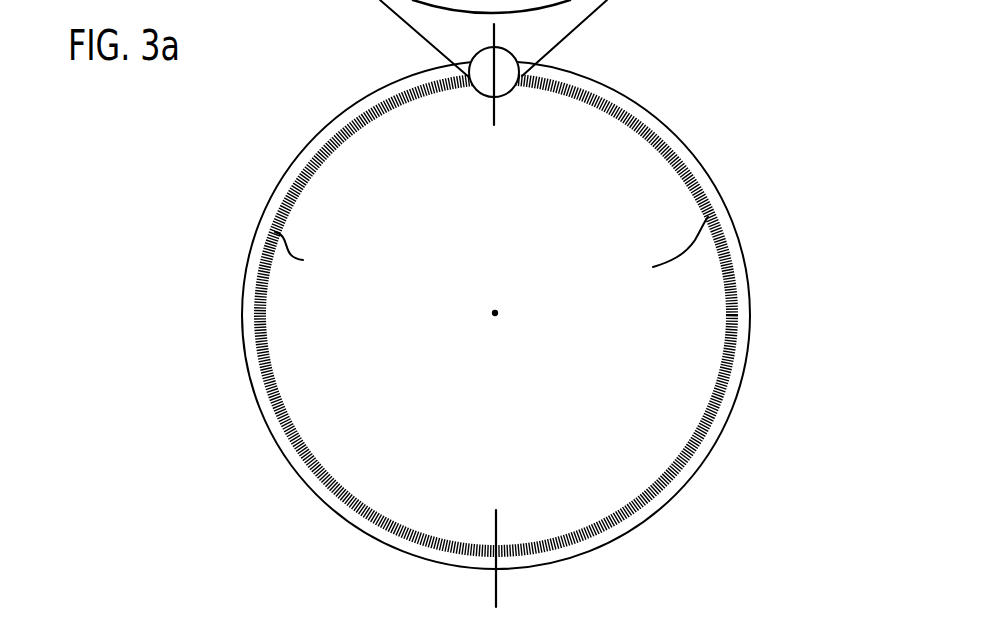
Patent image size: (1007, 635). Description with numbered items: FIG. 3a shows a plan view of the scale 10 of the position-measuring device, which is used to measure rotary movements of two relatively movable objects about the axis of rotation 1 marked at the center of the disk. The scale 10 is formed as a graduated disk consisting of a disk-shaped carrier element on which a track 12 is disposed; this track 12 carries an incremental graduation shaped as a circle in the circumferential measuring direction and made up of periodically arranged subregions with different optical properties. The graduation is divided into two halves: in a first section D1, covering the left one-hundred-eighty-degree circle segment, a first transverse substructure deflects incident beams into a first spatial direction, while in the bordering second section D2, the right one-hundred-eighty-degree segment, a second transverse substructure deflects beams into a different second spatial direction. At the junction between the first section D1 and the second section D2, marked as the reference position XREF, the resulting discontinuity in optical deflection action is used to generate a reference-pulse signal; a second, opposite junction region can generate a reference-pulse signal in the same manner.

The axis of rotation 1 is at (495, 313).
The scale 10 is at (238, 422).
The track 12 is at (342, 508).
The first section D1 is at (308, 260).
The second section D2 is at (663, 259).
The reference position XREF is at (494, 115).